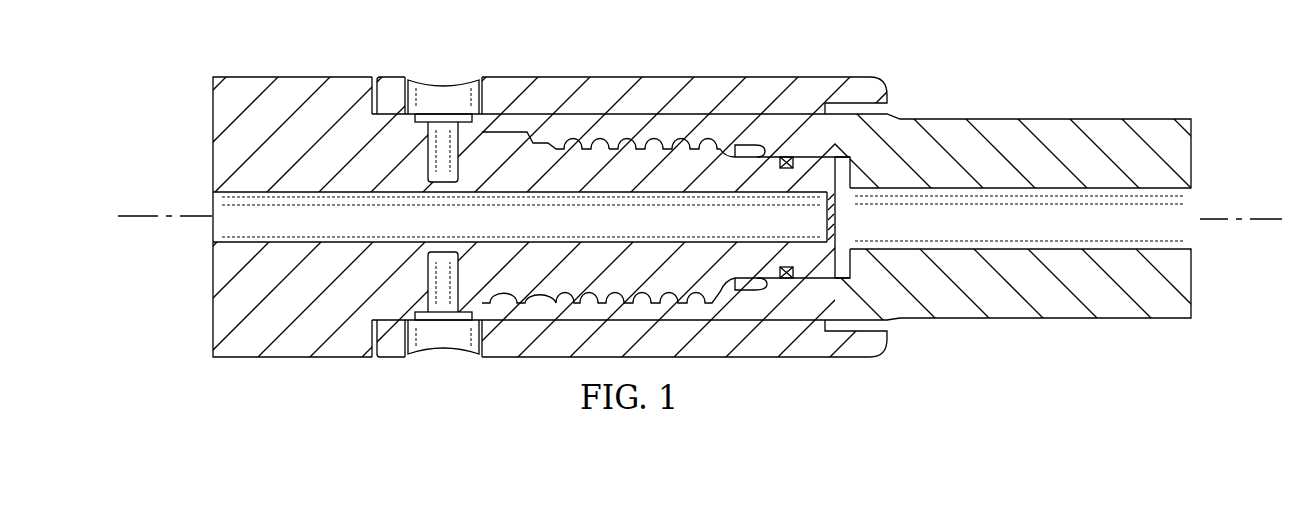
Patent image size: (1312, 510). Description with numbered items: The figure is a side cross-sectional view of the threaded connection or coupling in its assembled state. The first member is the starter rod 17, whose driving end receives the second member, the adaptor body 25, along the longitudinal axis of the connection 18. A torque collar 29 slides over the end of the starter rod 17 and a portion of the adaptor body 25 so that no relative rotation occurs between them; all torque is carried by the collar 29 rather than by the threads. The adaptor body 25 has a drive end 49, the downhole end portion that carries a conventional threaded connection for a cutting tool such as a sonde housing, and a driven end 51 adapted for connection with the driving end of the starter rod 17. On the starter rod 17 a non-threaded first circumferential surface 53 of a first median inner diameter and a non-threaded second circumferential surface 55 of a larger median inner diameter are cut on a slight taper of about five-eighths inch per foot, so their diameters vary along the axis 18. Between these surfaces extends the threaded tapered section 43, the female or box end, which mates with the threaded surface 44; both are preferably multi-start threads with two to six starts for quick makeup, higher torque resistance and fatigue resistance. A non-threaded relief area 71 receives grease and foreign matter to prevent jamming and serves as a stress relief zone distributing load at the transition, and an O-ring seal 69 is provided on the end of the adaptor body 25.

The starter rod 17 is at (1051, 108).
The longitudinal axis of the connection 18 is at (1266, 214).
The adaptor body 25 is at (275, 369).
The torque collar 29 is at (647, 68).
The threaded tapered section 43 is at (612, 130).
The threaded surface 44 is at (693, 147).
The drive end 49 is at (289, 85).
The driven end 51 is at (598, 289).
The first circumferential surface 53 is at (800, 272).
The second circumferential surface 55 is at (486, 305).
The O-ring seal 69 is at (788, 156).
The relief area 71 is at (785, 157).